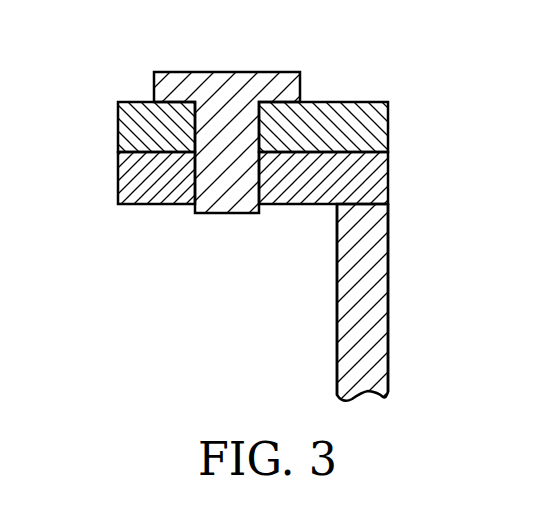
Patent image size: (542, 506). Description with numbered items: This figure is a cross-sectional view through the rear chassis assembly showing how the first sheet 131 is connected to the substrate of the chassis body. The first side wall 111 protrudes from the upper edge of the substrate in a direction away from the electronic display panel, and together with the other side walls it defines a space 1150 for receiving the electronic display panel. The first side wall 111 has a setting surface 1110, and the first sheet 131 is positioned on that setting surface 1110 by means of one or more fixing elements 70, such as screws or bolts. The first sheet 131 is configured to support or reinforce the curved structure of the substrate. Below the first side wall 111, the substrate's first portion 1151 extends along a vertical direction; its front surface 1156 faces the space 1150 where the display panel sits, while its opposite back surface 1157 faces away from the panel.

The fixing element 70 is at (229, 83).
The setting surface 1110 is at (340, 150).
The first sheet 131 is at (120, 125).
The first side wall 111 is at (120, 175).
The space 1150 is at (221, 288).
The first portion 1151 is at (380, 293).
The front surface 1156 is at (337, 358).
The back surface 1157 is at (388, 357).